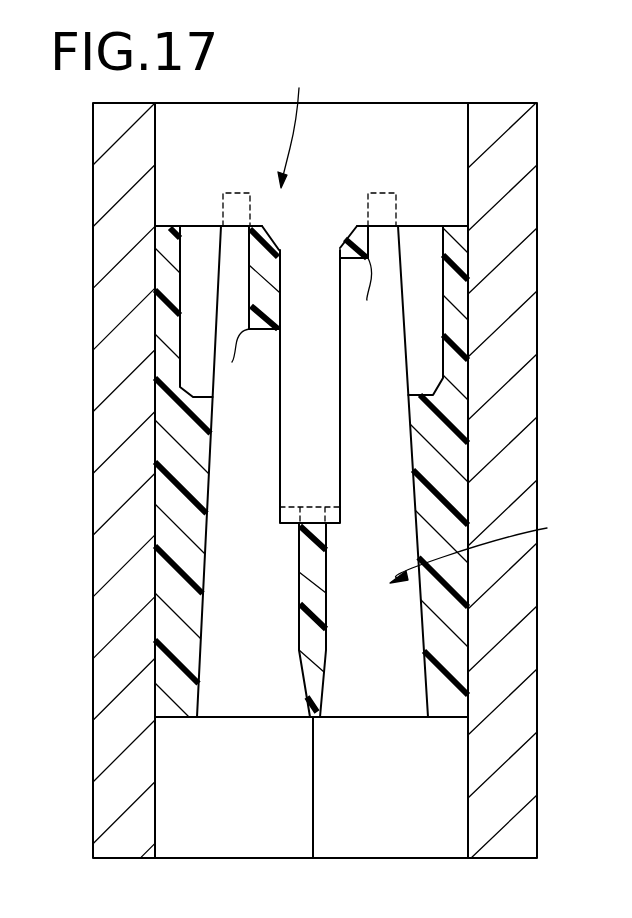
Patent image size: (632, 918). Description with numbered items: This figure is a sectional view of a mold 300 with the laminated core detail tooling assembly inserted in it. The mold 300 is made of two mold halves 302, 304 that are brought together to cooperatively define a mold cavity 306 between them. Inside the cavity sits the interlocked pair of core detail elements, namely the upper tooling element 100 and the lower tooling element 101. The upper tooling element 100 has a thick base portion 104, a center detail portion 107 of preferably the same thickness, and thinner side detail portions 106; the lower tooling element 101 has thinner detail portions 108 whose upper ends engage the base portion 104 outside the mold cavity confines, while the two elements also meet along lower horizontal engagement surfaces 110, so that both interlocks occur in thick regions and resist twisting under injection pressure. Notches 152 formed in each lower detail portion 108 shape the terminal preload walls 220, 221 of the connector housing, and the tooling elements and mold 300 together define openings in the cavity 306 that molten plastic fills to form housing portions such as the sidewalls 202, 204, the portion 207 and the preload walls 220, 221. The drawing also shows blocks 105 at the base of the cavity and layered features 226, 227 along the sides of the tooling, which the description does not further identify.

The upper tooling element 100 is at (304, 127).
The lower tooling element 101 is at (404, 731).
The base portion 104 is at (325, 210).
The bottom blocks 105 is at (256, 775).
The side detail portions 106 is at (221, 285).
The center detail portion 107 is at (334, 428).
The lower tooling element detail portions 108 is at (262, 635).
The lower horizontal engagement surfaces 110 is at (297, 513).
The notches 152 is at (306, 322).
The sidewall 202 is at (447, 453).
The sidewall 204 is at (93, 483).
The connector housing portion 207 is at (300, 670).
The terminal preload wall 220 is at (366, 235).
The terminal preload wall 221 is at (247, 247).
The compliant layer thick bands 226 is at (213, 413).
The compliant layer thin bands 227 is at (213, 328).
The mold 300 is at (508, 98).
The mold half 302 is at (513, 205).
The mold half 304 is at (530, 658).
The mold cavity 306 is at (490, 550).